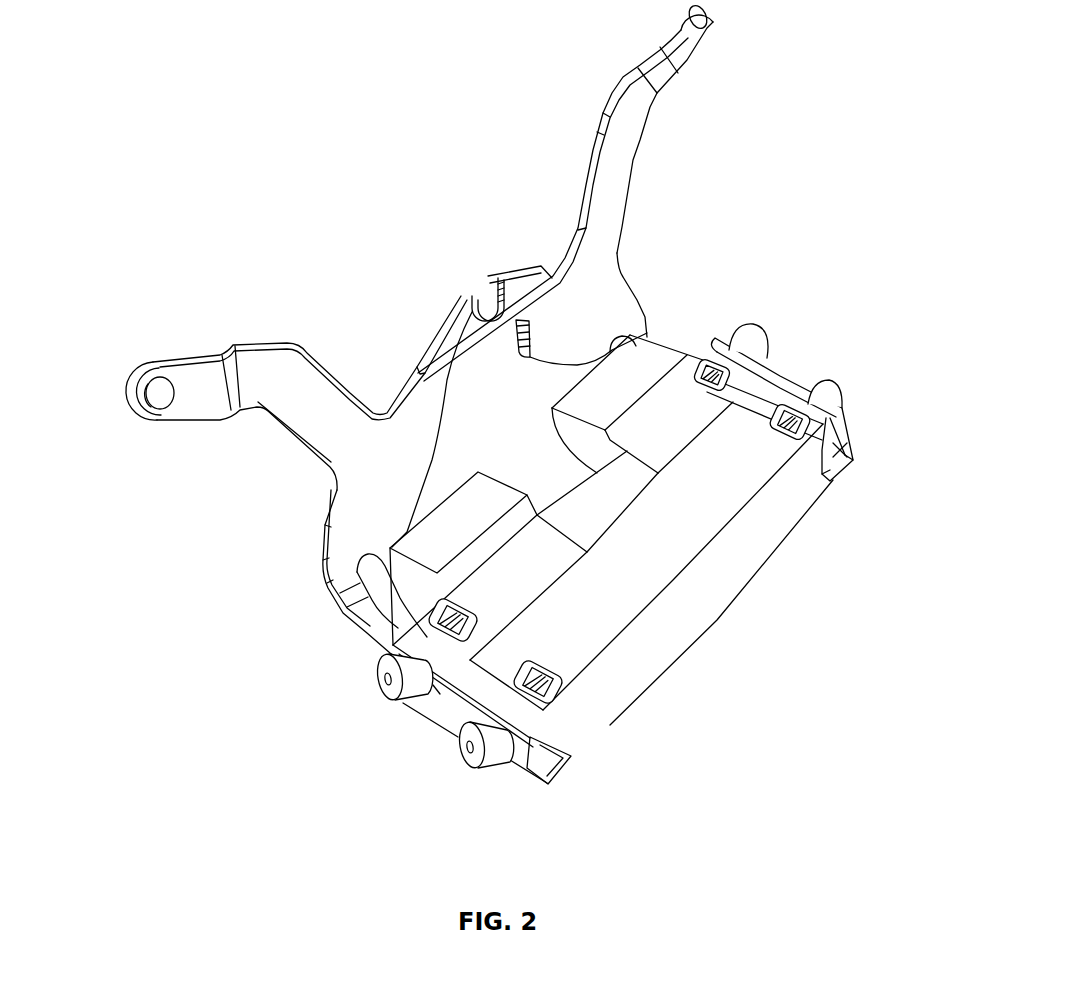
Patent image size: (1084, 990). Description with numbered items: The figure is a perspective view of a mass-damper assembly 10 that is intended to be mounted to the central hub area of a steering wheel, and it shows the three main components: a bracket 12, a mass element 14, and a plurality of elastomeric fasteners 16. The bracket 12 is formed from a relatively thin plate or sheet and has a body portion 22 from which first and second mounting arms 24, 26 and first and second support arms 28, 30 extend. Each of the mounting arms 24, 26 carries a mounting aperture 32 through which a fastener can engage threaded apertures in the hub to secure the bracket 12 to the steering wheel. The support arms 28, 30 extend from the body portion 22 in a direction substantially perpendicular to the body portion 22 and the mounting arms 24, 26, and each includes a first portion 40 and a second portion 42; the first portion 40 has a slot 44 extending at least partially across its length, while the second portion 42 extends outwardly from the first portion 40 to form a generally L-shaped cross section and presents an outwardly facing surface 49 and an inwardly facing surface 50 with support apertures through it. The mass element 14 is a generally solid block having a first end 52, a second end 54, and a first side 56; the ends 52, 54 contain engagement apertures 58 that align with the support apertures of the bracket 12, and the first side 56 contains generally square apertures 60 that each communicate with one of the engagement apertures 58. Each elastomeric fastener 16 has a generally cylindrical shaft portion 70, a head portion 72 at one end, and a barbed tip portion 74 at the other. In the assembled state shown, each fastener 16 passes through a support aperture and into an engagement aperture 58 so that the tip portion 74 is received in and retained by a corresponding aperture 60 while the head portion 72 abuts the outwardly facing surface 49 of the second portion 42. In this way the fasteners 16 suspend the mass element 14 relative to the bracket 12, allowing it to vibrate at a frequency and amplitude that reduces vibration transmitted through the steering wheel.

The mass-damper assembly 10 is at (237, 160).
The bracket 12 is at (442, 335).
The mass element 14 is at (620, 561).
The elastomeric fasteners 16 is at (746, 332).
The body portion 22 is at (618, 286).
The first mounting arm 24 is at (312, 373).
The second mounting arm 26 is at (638, 100).
The first support arm 28 is at (340, 633).
The second support arm 30 is at (711, 615).
The mounting aperture 32 is at (706, 26).
The first portion 40 is at (847, 471).
The second portion 42 is at (851, 434).
The slot 44 is at (617, 336).
The outwardly facing surface 49 is at (432, 688).
The inwardly facing surface 50 is at (838, 453).
The first end 52 is at (463, 675).
The second end 54 is at (770, 398).
The first side 56 is at (687, 548).
The engagement apertures 58 is at (428, 628).
The apertures 60 is at (712, 378).
The shaft portion 70 is at (393, 660).
The head portion 72 is at (762, 348).
The barbed tip portion 74 is at (710, 365).